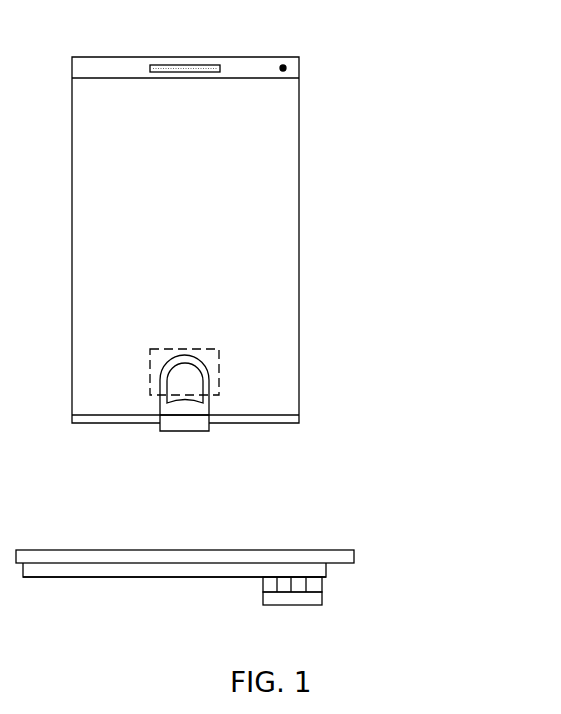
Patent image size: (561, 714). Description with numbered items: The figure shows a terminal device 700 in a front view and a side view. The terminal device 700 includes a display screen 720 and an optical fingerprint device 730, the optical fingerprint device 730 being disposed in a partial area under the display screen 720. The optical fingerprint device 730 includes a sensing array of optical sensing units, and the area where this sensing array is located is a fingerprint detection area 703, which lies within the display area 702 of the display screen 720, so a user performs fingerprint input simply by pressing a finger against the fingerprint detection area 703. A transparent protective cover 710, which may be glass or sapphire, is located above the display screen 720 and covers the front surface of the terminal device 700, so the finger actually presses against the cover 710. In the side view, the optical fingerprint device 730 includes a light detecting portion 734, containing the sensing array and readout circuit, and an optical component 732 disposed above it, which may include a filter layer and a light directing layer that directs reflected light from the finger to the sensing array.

The terminal device 700 is at (193, 27).
The transparent protective cover 710 is at (255, 68).
The display area 702 is at (282, 350).
The fingerprint detection area 703 is at (219, 372).
The display screen 720 is at (193, 578).
The optical fingerprint device 730 is at (358, 600).
The optical component 732 is at (322, 587).
The light detecting portion 734 is at (322, 597).